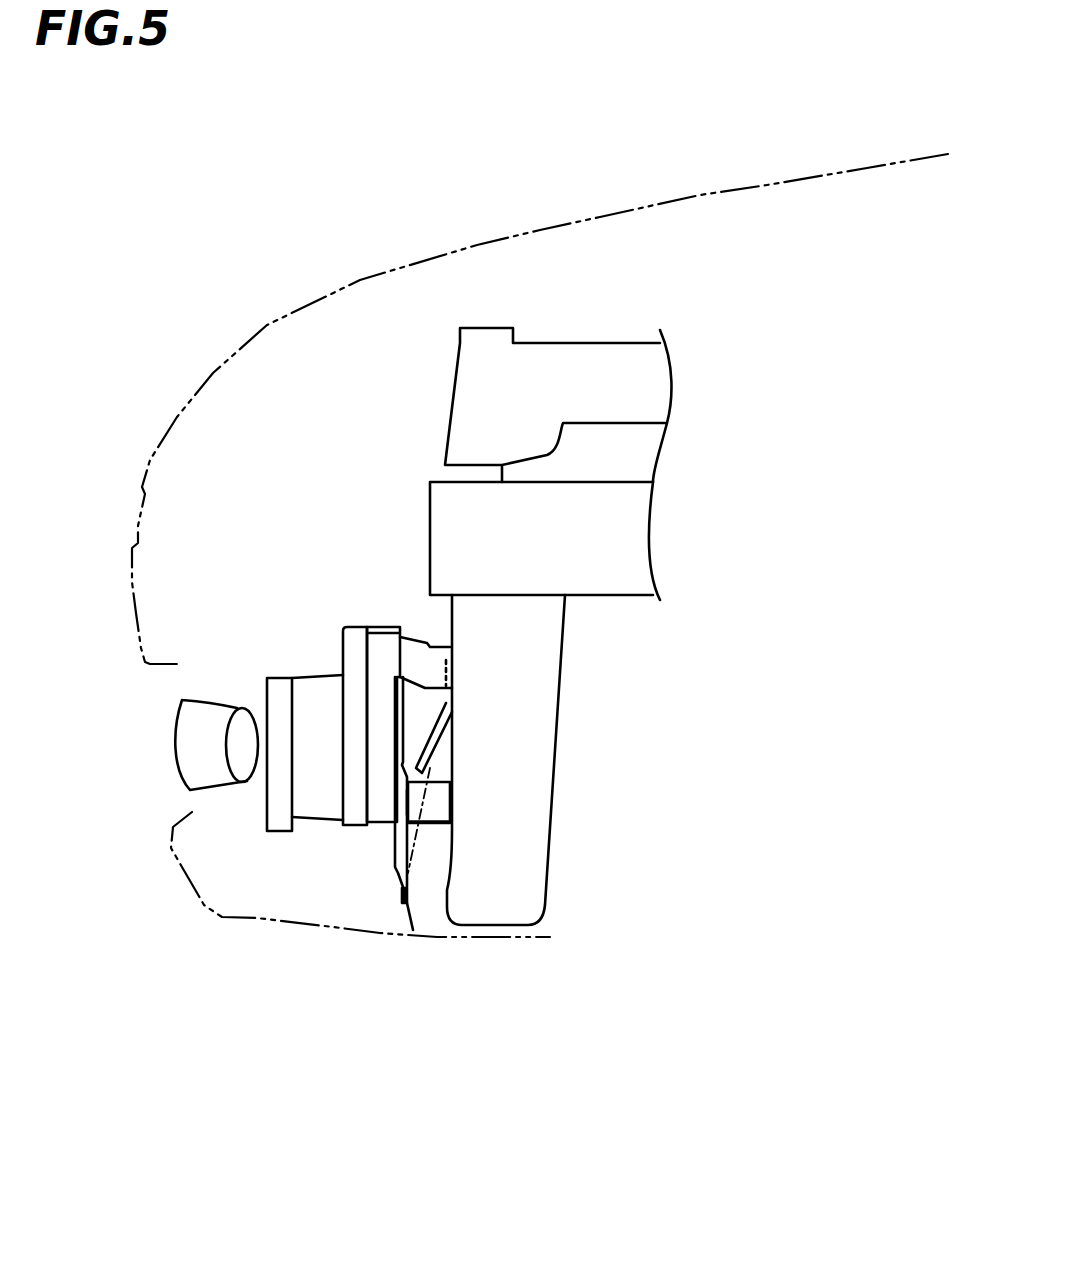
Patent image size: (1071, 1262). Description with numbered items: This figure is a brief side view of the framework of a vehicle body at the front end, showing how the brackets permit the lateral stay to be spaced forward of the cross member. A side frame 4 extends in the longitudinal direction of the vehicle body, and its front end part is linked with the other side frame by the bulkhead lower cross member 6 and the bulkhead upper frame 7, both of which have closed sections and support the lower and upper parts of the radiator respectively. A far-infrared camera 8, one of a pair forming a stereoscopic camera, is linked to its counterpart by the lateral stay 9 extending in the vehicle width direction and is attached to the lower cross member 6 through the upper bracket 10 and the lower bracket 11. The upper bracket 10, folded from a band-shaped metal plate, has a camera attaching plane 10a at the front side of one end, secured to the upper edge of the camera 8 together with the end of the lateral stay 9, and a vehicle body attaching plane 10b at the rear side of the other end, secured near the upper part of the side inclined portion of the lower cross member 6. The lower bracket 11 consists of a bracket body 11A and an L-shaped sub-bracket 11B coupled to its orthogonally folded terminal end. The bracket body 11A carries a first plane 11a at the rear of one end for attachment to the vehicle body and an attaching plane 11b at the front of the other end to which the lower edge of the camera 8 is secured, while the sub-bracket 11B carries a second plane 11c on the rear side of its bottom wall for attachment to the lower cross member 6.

The side frame 4 is at (600, 573).
The bulkhead lower cross member 6 is at (485, 907).
The bulkhead upper frame 7 is at (473, 367).
The far-infrared camera 8 is at (297, 693).
The lateral stay 9 is at (380, 627).
The upper bracket 10 is at (470, 645).
The camera attaching plane 10a is at (397, 657).
The vehicle body attaching plane 10b is at (450, 668).
The lower bracket 11 is at (405, 898).
The bracket body 11A is at (398, 857).
The sub-bracket 11B is at (437, 802).
The first plane 11a is at (410, 895).
The attaching plane 11b is at (397, 800).
The second plane 11c is at (455, 812).